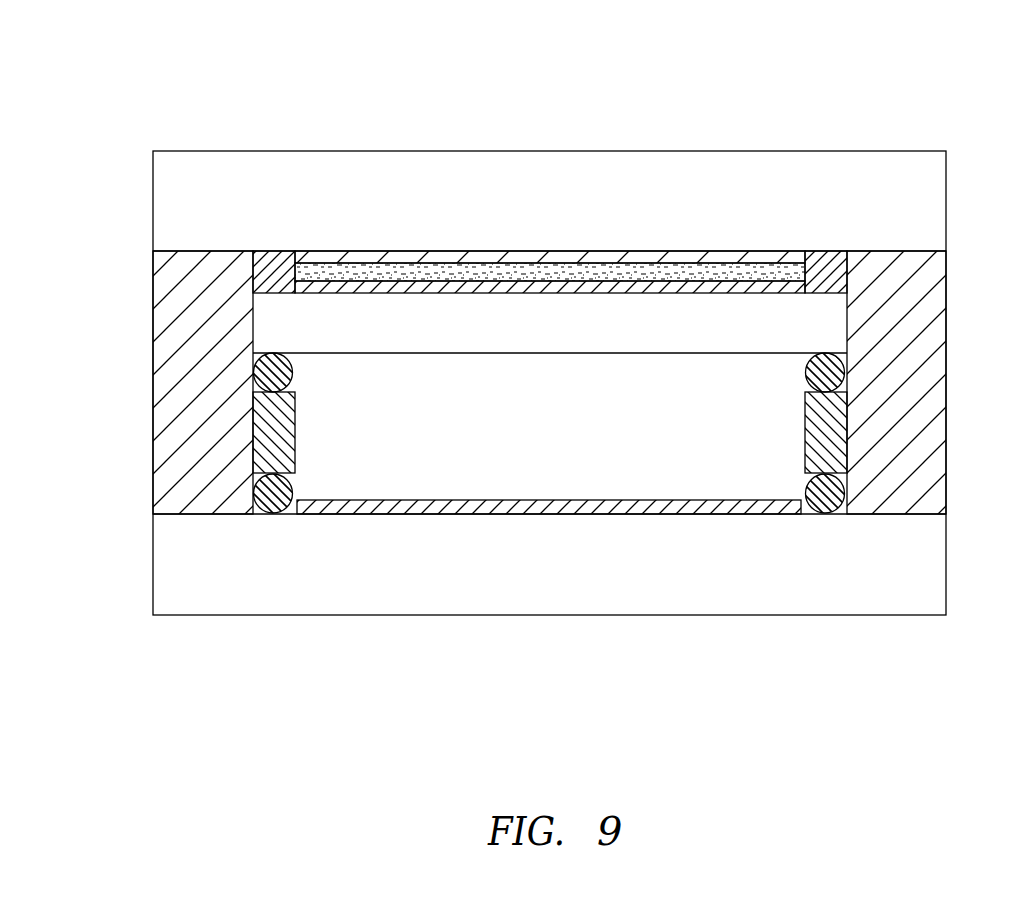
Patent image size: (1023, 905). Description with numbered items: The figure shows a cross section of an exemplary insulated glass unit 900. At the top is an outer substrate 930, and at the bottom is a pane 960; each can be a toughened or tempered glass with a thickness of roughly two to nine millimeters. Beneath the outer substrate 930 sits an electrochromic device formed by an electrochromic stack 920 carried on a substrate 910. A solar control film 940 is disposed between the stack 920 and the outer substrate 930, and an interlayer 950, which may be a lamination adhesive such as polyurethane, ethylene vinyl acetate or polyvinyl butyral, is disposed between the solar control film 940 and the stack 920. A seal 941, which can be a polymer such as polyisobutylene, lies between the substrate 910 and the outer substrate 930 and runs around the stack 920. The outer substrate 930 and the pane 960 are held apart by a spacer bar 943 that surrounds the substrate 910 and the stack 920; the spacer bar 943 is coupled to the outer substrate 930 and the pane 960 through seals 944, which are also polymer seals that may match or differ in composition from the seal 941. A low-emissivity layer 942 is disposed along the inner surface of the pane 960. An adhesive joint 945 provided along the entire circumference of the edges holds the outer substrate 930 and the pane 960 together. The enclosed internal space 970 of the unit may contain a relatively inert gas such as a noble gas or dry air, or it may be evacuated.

The insulated glass unit 900 is at (120, 62).
The substrate 910 is at (570, 336).
The electrochromic stack 920 is at (385, 270).
The outer substrate 930 is at (540, 150).
The solar control film 940 is at (636, 258).
The seal 941 is at (279, 253).
The low-emissivity layer 942 is at (396, 508).
The spacer bar 943 is at (288, 407).
The seals 944 is at (285, 373).
The adhesive joint 945 is at (168, 392).
The interlayer 950 is at (717, 266).
The pane 960 is at (473, 598).
The internal space 970 is at (570, 436).